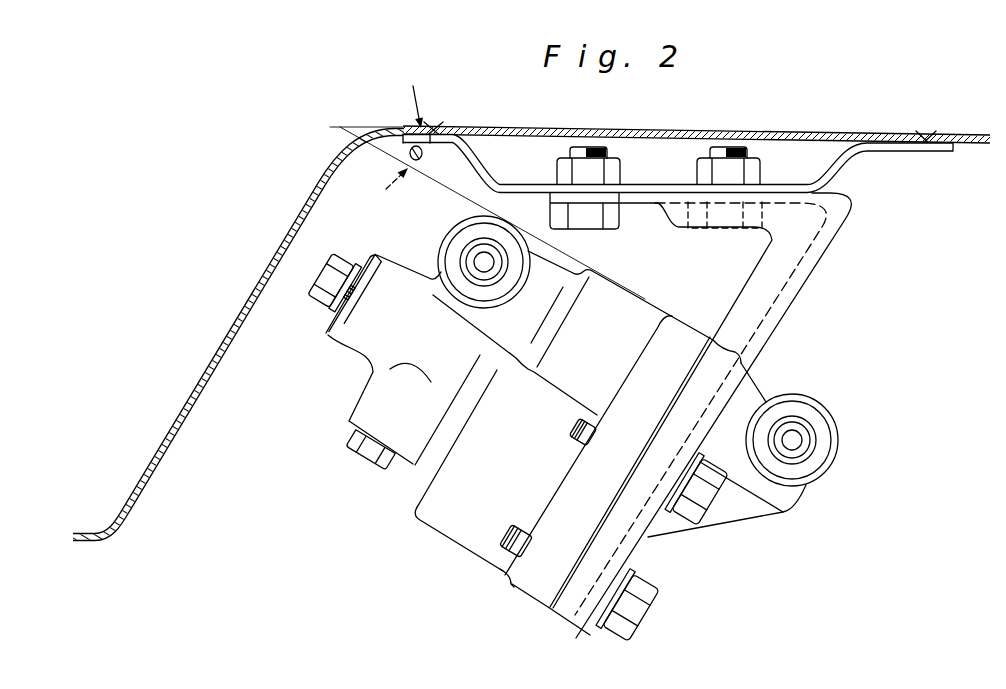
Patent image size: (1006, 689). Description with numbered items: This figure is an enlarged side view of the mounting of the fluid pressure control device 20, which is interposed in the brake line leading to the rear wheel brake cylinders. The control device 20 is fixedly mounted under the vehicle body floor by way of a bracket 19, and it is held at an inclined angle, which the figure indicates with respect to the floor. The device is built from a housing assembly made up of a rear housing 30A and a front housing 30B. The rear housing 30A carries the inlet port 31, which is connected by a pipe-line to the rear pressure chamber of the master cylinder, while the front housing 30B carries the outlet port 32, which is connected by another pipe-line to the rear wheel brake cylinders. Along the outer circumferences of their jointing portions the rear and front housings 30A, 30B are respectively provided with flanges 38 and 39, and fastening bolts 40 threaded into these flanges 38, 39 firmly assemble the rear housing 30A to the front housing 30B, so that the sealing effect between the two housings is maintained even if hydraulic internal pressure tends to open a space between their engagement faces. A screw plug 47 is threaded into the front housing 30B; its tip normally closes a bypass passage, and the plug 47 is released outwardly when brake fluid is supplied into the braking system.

The bracket 19 is at (818, 232).
The fluid pressure control device 20 is at (436, 522).
The rear housing 30A is at (797, 492).
The front housing 30B is at (421, 470).
The inlet port 31 is at (798, 441).
The outlet port 32 is at (490, 263).
The flange 38 is at (548, 602).
The flange 39 is at (521, 583).
The fastening bolts 40 is at (697, 505).
The screw plug 47 is at (343, 266).